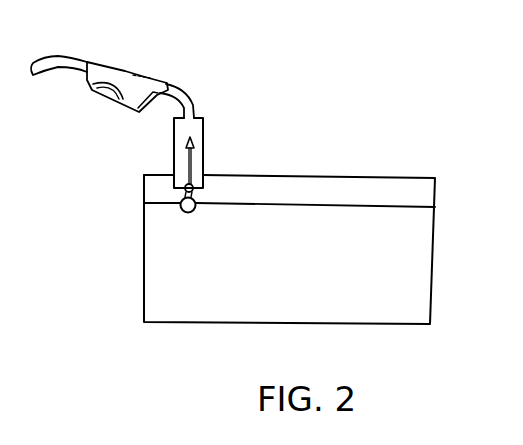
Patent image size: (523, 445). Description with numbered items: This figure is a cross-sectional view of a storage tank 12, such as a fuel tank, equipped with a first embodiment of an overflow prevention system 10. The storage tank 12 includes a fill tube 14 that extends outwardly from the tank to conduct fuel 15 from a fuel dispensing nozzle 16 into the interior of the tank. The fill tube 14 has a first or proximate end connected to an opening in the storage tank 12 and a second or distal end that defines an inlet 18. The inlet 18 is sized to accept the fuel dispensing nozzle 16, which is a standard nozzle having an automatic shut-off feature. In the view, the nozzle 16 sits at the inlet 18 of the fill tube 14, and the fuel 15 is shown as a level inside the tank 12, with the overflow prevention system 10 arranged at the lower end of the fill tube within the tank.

The overflow prevention system 10 is at (209, 216).
The storage tank 12 is at (378, 173).
The fill tube 14 is at (205, 137).
The fuel 15 is at (313, 203).
The fuel dispensing nozzle 16 is at (145, 72).
The inlet 18 is at (200, 116).